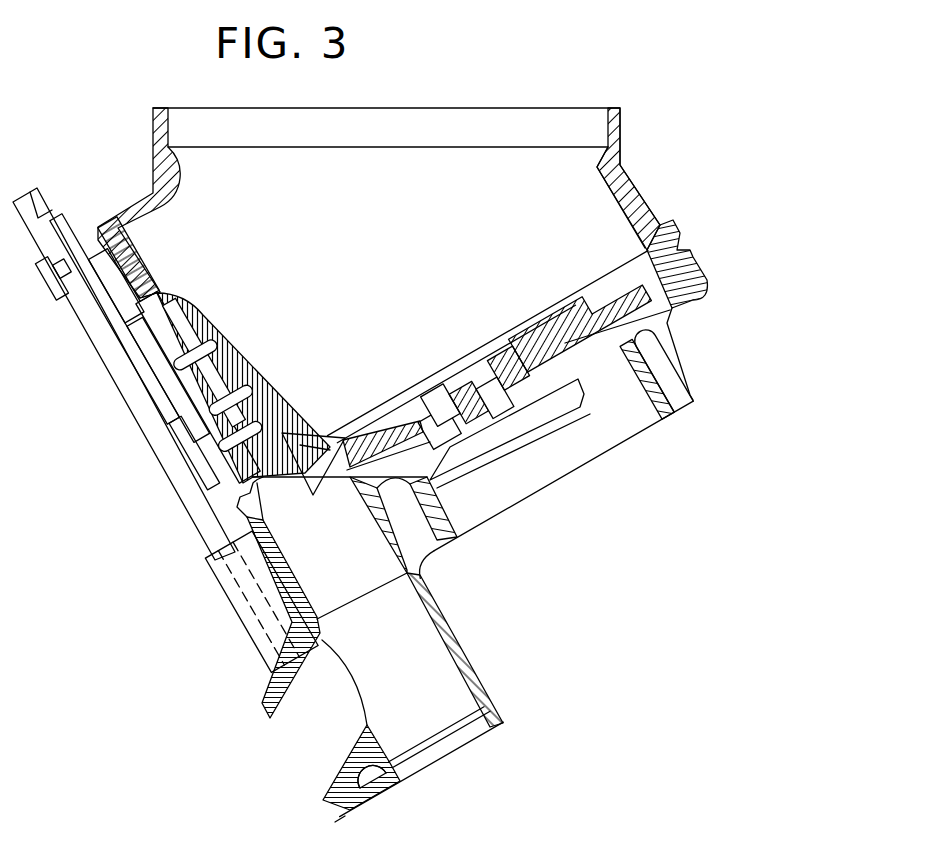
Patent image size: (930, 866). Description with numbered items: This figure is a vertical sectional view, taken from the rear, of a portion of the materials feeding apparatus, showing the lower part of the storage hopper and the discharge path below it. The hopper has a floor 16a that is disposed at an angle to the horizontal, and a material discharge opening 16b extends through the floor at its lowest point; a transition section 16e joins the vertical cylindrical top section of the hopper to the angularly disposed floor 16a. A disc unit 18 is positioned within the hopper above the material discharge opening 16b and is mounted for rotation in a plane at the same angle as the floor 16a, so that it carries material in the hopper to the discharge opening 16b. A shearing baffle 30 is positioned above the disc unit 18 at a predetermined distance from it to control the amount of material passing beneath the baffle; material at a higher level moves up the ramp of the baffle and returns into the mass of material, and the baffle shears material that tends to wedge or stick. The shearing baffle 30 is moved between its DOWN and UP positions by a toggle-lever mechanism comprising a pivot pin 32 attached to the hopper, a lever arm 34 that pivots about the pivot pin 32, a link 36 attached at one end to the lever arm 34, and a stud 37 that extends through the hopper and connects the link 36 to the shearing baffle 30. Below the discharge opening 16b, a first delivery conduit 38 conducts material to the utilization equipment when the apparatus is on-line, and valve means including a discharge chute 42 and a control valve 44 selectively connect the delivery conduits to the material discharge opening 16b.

The floor 16a is at (673, 307).
The material discharge opening 16b is at (318, 435).
The transition section 16e is at (632, 191).
The disc unit 18 is at (520, 332).
The shearing baffle 30 is at (212, 348).
The pivot pin 32 is at (100, 247).
The lever arm 34 is at (120, 353).
The link 36 is at (153, 387).
The stud 37 is at (173, 443).
The first delivery conduit 38 is at (260, 692).
The discharge chute 42 is at (287, 578).
The control valve 44 is at (452, 647).